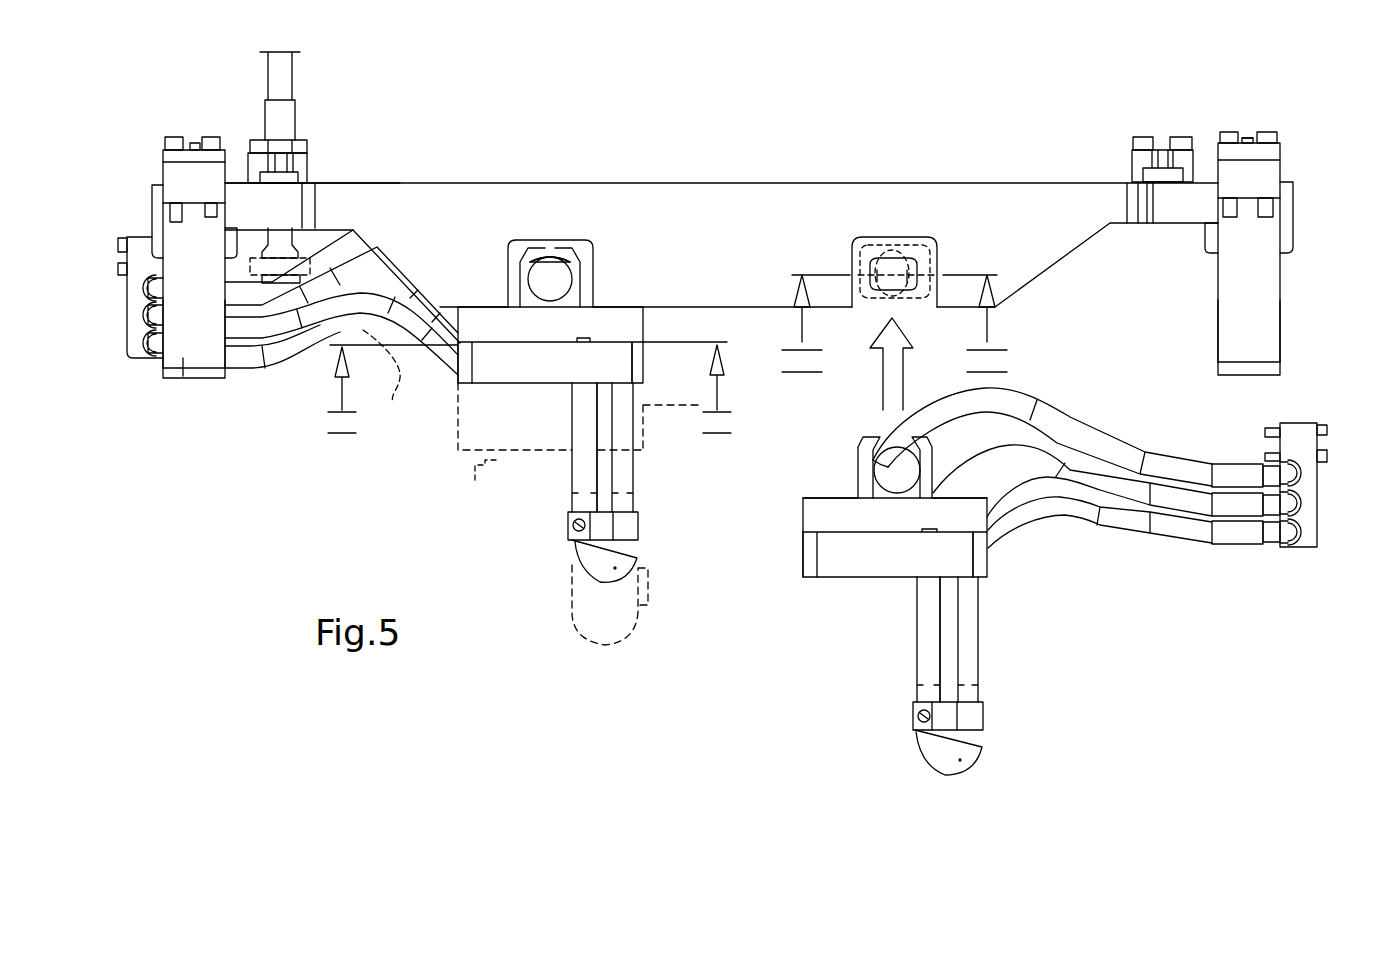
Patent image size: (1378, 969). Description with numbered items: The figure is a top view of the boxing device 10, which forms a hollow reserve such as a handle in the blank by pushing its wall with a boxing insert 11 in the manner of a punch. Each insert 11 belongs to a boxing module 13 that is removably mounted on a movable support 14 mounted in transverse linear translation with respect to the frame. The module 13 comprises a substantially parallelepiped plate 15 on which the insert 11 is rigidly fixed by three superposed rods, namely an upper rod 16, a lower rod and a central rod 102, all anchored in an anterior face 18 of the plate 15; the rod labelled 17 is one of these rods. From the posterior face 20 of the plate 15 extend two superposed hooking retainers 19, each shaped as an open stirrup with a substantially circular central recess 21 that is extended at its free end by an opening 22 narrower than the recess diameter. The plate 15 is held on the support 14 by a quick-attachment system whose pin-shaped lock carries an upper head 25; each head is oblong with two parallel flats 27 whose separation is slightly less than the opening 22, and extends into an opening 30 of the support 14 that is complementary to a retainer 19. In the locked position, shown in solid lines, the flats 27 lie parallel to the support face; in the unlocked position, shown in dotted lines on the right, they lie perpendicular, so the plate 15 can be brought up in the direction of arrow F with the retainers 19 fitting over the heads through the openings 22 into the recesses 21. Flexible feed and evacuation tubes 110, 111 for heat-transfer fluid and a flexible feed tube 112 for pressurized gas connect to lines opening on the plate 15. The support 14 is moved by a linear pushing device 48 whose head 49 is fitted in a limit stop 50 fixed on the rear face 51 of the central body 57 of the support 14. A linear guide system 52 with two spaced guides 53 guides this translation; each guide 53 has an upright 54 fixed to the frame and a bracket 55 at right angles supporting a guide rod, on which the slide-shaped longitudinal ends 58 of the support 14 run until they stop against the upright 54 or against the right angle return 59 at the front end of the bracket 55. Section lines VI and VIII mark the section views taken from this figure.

The boxing device 10 is at (711, 128).
The boxing insert 11 is at (645, 545).
The boxing module 13 is at (630, 330).
The movable support 14 is at (1060, 183).
The plate 15 is at (507, 385).
The upper rod 16 is at (576, 478).
The supply pipe 17 is at (627, 470).
The anterior face 18 is at (645, 385).
The hooking retainer 19 is at (594, 285).
The posterior face 20 is at (492, 305).
The central recess 21 is at (541, 302).
The opening 22 is at (563, 250).
The upper head 25 is at (960, 248).
The flats 27 is at (895, 258).
The opening 30 is at (860, 305).
The linear pushing device 48 is at (300, 70).
The head 49 is at (300, 177).
The limit stop 50 is at (305, 148).
The rear face 51 is at (420, 183).
The linear guide system 52 is at (130, 215).
The guide 53 is at (157, 181).
The upright 54 is at (1247, 143).
The bracket 55 is at (185, 375).
The central body 57 is at (790, 183).
The longitudinal end 58 is at (152, 200).
The right angle return 59 is at (208, 378).
The central rod 102 is at (612, 480).
The flexible feed tube 110 is at (258, 340).
The flexible evacuation tube 111 is at (355, 243).
The flexible feed tube 112 is at (385, 264).
The arrow F is at (898, 372).
The section line VI is at (529, 388).
The section line VIII is at (894, 324).